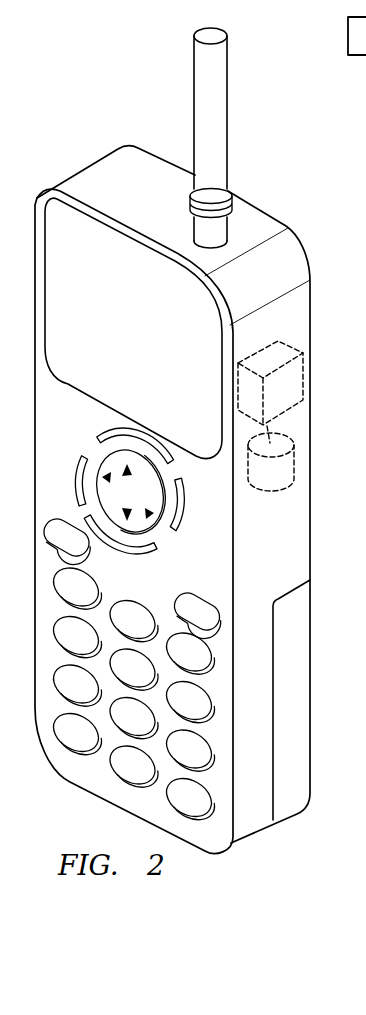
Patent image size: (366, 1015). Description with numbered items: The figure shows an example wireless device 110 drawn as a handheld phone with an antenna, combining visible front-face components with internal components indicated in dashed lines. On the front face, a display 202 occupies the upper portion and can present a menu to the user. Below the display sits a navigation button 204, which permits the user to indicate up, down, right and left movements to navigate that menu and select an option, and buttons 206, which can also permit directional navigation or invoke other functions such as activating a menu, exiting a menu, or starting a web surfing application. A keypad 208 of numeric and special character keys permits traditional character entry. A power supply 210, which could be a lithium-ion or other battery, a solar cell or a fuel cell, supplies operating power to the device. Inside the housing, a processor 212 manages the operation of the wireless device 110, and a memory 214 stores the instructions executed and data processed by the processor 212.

The wireless device 110 is at (103, 101).
The display 202 is at (121, 244).
The navigation button 204 is at (172, 538).
The buttons 206 is at (143, 527).
The keypad 208 is at (102, 782).
The power supply 210 is at (290, 803).
The processor 212 is at (305, 374).
The memory 214 is at (296, 461).